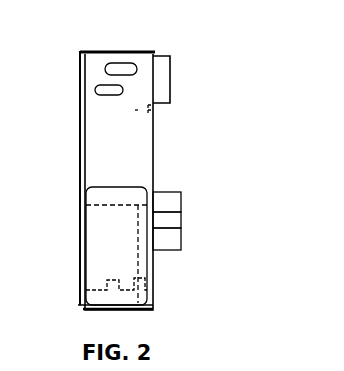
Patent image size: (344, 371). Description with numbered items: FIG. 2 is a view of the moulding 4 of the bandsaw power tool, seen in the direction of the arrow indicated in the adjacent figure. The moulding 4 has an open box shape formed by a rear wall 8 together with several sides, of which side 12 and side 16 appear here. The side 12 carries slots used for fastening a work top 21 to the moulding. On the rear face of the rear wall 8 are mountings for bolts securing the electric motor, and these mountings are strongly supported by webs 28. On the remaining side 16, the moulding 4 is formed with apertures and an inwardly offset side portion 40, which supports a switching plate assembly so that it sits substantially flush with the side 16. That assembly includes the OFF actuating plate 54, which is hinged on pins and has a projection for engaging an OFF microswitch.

The side 12 is at (119, 53).
The moulding 4 is at (149, 140).
The side 16 is at (125, 162).
The rear wall 8 is at (152, 113).
The webs 28 is at (173, 197).
The work top 21 is at (172, 220).
The inwardly offset side portion 40 is at (137, 232).
The OFF actuating plate 54 is at (135, 248).